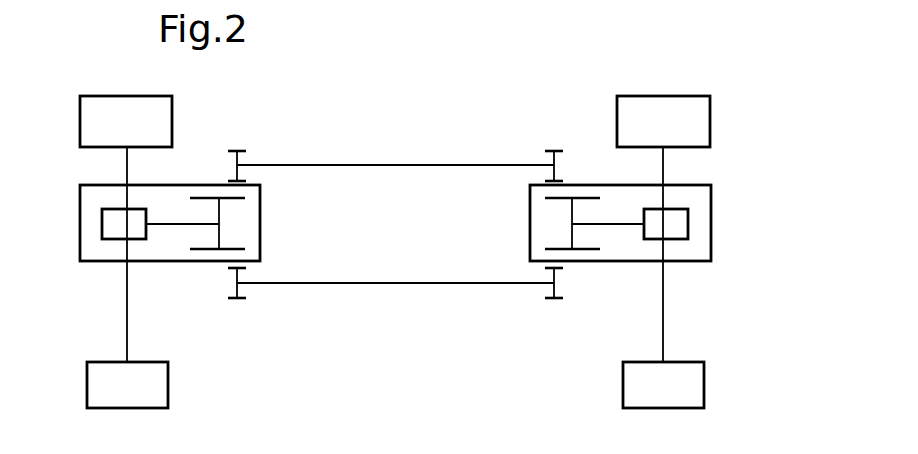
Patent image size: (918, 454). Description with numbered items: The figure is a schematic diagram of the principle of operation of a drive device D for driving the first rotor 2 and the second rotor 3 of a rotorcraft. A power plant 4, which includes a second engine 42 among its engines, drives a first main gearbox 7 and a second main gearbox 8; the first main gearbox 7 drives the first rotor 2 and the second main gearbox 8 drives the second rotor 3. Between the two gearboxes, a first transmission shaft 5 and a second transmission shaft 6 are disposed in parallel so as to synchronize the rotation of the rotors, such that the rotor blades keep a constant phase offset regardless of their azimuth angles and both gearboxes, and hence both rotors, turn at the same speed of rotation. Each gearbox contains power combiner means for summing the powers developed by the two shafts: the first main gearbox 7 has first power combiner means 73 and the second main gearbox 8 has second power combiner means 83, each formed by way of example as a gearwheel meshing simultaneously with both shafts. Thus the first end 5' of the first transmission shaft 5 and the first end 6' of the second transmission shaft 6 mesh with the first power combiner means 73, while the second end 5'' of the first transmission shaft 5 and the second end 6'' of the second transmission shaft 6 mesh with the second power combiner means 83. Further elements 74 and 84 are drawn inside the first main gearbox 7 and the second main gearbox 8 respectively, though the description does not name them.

The drive device D is at (380, 100).
The first rotor 2 is at (111, 103).
The second rotor 3 is at (677, 103).
The power plant 4 is at (192, 392).
The second engine 42 is at (87, 380).
The first transmission shaft 5 is at (395, 249).
The first end of the first transmission shaft 5' is at (258, 323).
The second end of the first transmission shaft 5'' is at (579, 318).
The second transmission shaft 6 is at (395, 198).
The first end of the second transmission shaft 6' is at (260, 119).
The second end of the second transmission shaft 6'' is at (530, 119).
The first main gearbox 7 is at (100, 262).
The first power combiner means 73 is at (205, 250).
The first gear stage 74 is at (102, 230).
The second main gearbox 8 is at (688, 262).
The second power combiner means 83 is at (572, 242).
The second gear stage 84 is at (690, 220).